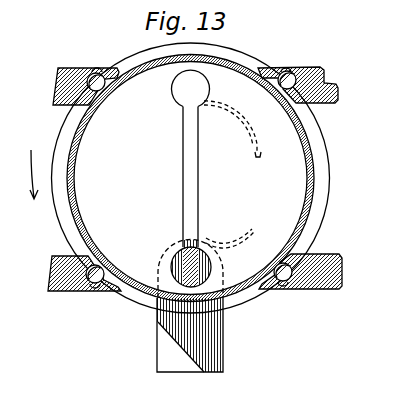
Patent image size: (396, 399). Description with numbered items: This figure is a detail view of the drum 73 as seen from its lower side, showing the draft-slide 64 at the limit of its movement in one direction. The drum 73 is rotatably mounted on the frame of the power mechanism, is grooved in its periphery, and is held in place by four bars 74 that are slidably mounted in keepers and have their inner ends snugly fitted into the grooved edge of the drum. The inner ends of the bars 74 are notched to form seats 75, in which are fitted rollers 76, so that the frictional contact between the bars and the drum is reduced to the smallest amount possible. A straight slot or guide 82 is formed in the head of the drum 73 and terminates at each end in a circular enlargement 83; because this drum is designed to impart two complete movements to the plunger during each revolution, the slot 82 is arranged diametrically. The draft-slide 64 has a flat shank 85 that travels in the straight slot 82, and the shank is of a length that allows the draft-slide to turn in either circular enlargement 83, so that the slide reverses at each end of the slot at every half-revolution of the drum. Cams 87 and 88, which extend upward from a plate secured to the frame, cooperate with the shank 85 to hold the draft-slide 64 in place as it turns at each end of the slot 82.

The draft-slide 64 is at (190, 306).
The drum 73 is at (190, 178).
The bars 74 is at (58, 72).
The seats 75 is at (107, 74).
The rollers 76 is at (96, 70).
The slot 82 is at (196, 206).
The circular enlargements 83 is at (191, 98).
The flat shank 85 is at (171, 262).
The cam 87 is at (261, 131).
The cam 88 is at (252, 229).